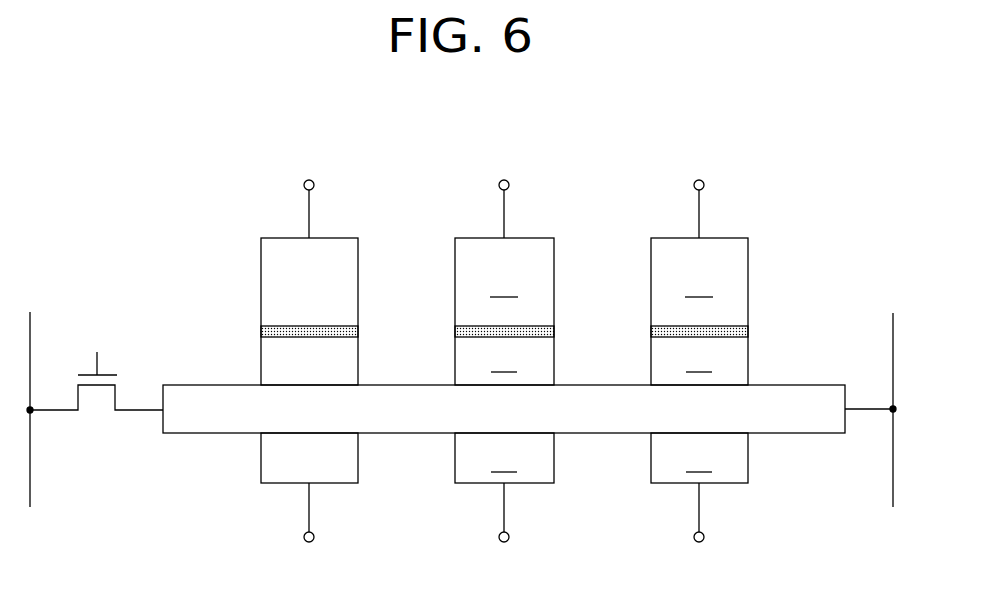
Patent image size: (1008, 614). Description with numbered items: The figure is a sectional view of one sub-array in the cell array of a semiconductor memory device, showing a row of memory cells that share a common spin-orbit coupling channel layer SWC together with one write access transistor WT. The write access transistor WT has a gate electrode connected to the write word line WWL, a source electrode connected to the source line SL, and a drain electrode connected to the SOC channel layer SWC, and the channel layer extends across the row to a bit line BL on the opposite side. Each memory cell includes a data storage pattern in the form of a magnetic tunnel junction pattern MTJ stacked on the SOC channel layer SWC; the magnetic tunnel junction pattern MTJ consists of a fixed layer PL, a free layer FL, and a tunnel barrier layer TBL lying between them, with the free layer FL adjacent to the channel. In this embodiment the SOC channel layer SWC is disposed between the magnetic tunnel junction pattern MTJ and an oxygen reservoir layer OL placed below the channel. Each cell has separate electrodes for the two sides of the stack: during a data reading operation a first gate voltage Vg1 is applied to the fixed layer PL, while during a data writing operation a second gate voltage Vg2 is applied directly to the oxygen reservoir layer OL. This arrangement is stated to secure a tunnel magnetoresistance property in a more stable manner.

The source line SL is at (31, 396).
The bit line BL is at (876, 395).
The write access transistor WT is at (97, 400).
The write word line WWL is at (95, 349).
The magnetic tunnel junction pattern MTJ is at (175, 378).
The fixed layer PL is at (272, 284).
The tunnel barrier layer TBL is at (272, 331).
The free layer FL is at (272, 366).
The oxygen reservoir layer OL is at (272, 461).
The SOC channel layer SWC is at (605, 422).
The first gate voltage Vg1 is at (504, 192).
The second gate voltage Vg2 is at (504, 530).